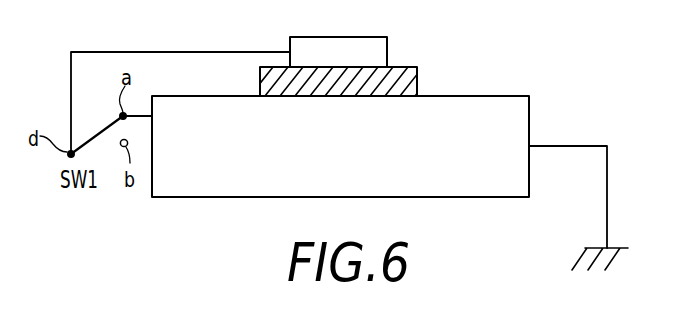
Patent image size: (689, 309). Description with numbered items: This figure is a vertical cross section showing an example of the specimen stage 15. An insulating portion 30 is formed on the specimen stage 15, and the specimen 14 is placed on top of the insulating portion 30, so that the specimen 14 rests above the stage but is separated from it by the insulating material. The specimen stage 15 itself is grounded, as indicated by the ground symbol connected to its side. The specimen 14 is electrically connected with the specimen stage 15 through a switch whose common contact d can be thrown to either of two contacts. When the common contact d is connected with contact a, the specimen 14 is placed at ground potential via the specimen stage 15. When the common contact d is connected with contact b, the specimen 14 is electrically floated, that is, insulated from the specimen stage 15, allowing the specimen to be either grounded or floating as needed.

The specimen 14 is at (387, 47).
The insulating portion 30 is at (417, 76).
The specimen stage 15 is at (529, 108).